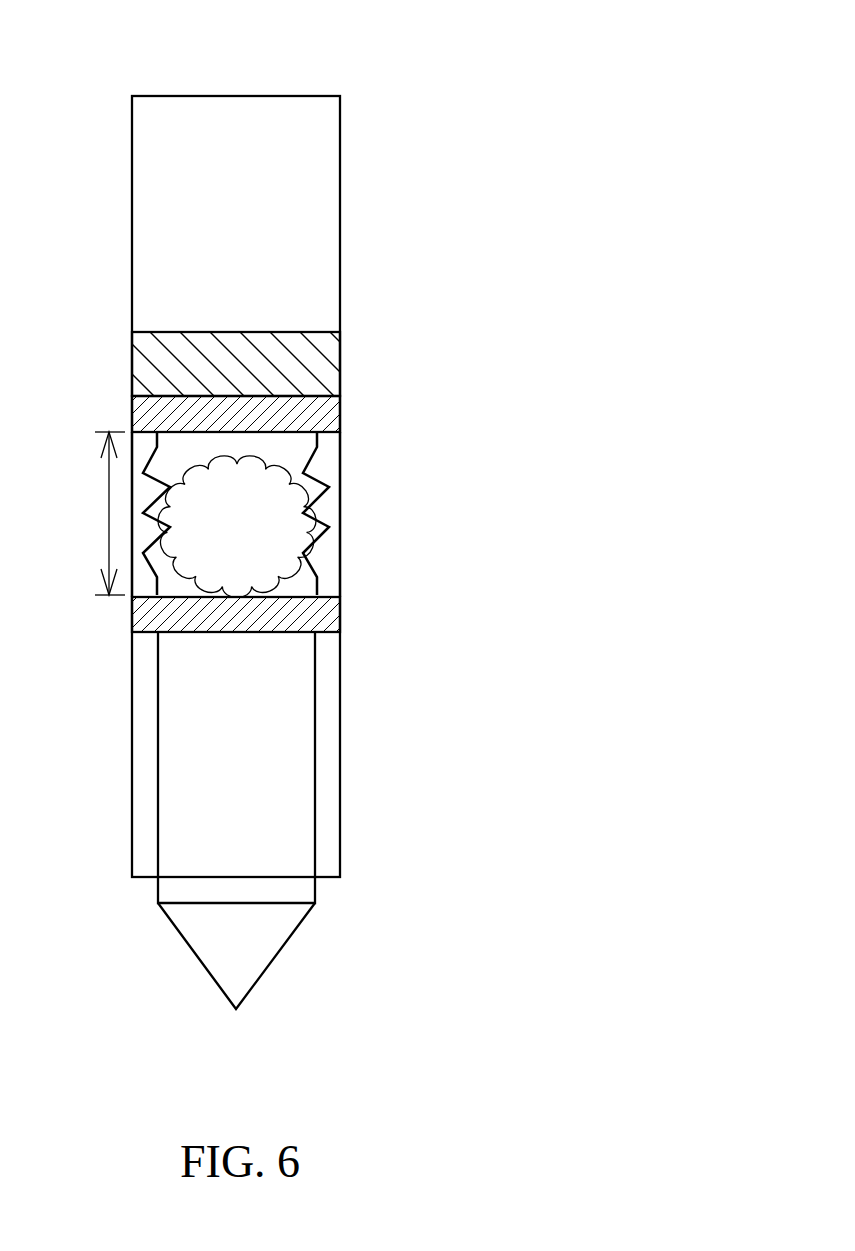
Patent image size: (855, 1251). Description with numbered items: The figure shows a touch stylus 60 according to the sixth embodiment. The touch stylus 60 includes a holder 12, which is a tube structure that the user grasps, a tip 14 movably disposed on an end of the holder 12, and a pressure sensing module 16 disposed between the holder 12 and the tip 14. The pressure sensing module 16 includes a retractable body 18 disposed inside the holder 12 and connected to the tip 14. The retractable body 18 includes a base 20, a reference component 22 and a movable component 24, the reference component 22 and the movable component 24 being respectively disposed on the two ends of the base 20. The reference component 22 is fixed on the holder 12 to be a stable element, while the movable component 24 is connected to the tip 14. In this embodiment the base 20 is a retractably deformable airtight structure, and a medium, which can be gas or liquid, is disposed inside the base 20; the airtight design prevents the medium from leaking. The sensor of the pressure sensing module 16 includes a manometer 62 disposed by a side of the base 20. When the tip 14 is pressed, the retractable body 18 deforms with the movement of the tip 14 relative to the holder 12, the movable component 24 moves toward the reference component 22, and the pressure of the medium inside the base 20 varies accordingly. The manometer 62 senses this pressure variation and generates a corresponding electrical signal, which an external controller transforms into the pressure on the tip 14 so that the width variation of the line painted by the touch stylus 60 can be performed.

The touch stylus 60 is at (442, 58).
The holder 12 is at (330, 167).
The tip 14 is at (267, 935).
The pressure sensing module 16 is at (465, 325).
The manometer 62 is at (325, 358).
The reference component 22 is at (340, 412).
The retractable body 18 is at (403, 390).
The base 20 is at (318, 502).
The movable component 24 is at (340, 613).